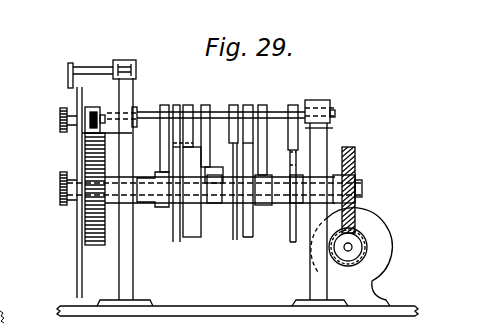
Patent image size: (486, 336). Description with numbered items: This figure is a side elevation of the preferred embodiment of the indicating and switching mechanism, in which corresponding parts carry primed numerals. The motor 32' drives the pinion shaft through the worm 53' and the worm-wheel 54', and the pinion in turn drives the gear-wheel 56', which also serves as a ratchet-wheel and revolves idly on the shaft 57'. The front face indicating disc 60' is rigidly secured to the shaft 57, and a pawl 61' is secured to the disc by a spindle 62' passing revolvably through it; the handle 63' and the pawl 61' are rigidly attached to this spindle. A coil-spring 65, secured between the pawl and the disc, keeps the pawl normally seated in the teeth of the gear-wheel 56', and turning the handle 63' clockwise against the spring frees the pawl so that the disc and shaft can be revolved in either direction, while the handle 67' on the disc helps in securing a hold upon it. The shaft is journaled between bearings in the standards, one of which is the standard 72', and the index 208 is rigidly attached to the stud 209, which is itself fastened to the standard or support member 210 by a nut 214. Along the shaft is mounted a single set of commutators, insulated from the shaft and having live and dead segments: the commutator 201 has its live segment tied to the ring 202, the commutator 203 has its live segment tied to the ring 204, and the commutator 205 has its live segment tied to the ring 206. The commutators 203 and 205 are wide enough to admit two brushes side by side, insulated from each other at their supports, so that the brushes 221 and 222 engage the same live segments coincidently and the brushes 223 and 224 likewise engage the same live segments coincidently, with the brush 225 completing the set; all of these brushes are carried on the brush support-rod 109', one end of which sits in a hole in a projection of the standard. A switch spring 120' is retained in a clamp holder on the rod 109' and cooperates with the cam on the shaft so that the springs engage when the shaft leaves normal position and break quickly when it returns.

The stud 209 is at (110, 71).
The nut 214 is at (135, 68).
The index 208 is at (68, 88).
The spindle 62' is at (94, 108).
The coil-spring 65 is at (96, 112).
The handle 63' is at (53, 124).
The pawl 61' is at (118, 135).
The handle 67' is at (53, 188).
The front face indicating disc 60' is at (62, 192).
The gear-wheel 56' is at (95, 200).
The standard or support member 210 is at (119, 281).
The brush 225 is at (166, 104).
The brush 221 is at (194, 104).
The brush 222 is at (208, 106).
The brush 223 is at (246, 106).
The brush 224 is at (292, 106).
The brush support-rod 109' is at (317, 105).
The switch spring 120' is at (334, 129).
The worm-wheel 54' is at (362, 193).
The shaft 57' is at (360, 187).
The motor 32' is at (359, 257).
The worm 53' is at (369, 249).
The standard or support member 72' is at (315, 214).
The ring 202 is at (152, 203).
The commutator 201 is at (174, 243).
The commutator 203 is at (191, 238).
The ring 204 is at (215, 205).
The commutator 205 is at (246, 238).
The shaft 57 is at (273, 163).
The ring 206 is at (263, 208).